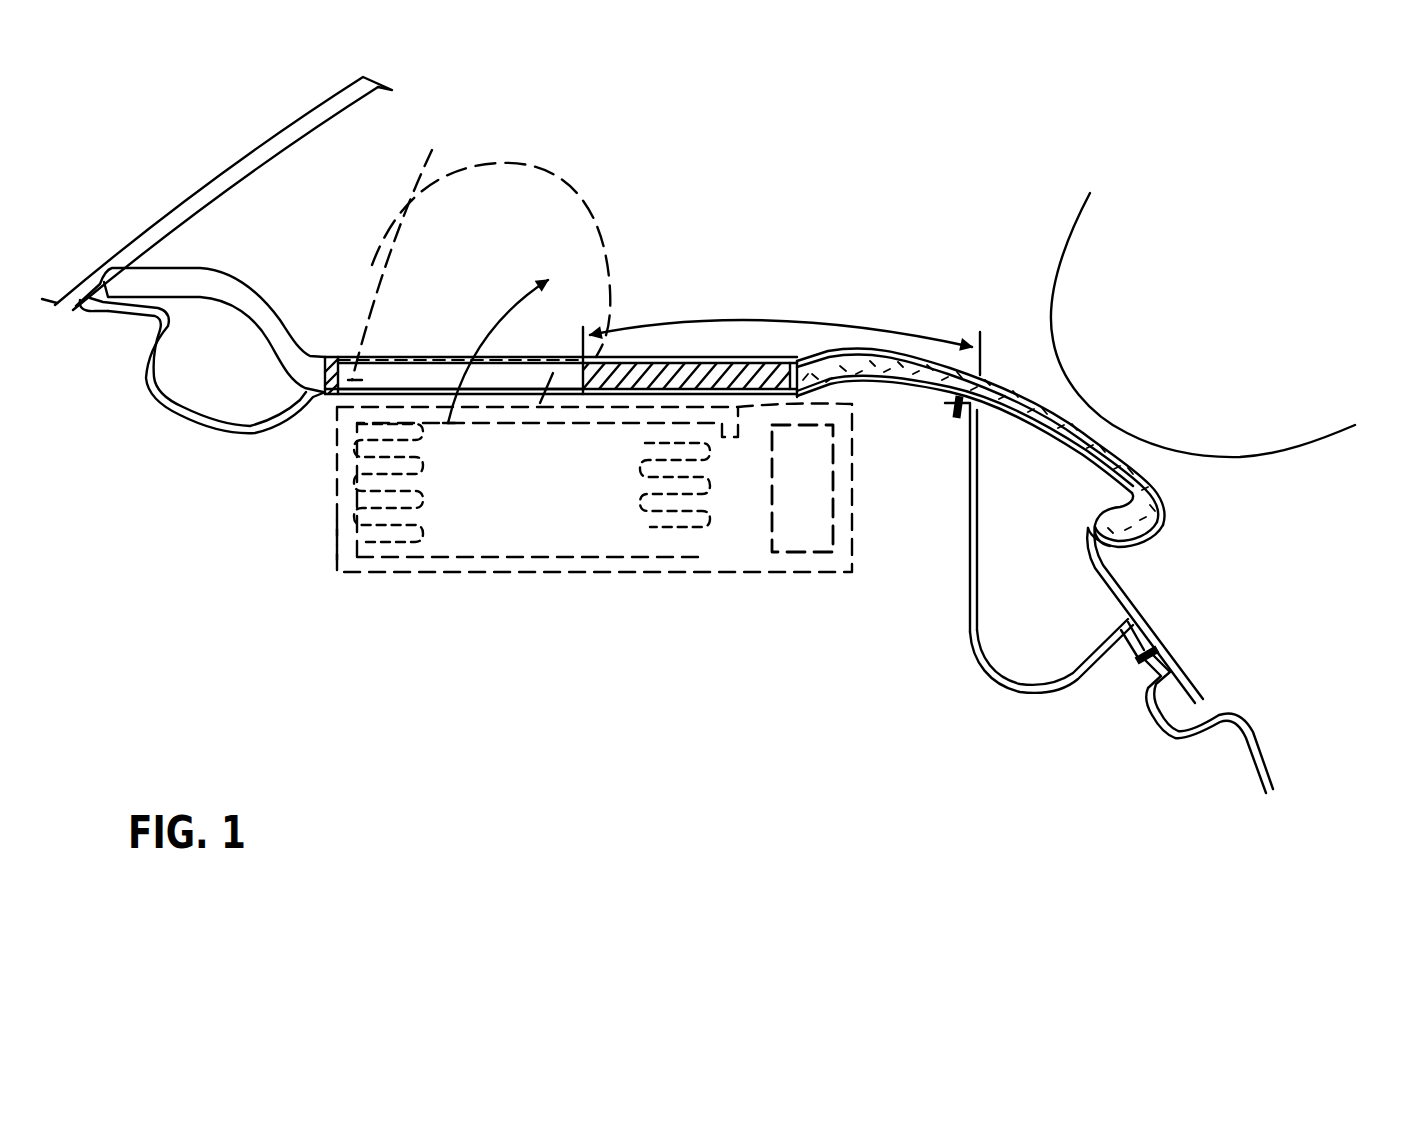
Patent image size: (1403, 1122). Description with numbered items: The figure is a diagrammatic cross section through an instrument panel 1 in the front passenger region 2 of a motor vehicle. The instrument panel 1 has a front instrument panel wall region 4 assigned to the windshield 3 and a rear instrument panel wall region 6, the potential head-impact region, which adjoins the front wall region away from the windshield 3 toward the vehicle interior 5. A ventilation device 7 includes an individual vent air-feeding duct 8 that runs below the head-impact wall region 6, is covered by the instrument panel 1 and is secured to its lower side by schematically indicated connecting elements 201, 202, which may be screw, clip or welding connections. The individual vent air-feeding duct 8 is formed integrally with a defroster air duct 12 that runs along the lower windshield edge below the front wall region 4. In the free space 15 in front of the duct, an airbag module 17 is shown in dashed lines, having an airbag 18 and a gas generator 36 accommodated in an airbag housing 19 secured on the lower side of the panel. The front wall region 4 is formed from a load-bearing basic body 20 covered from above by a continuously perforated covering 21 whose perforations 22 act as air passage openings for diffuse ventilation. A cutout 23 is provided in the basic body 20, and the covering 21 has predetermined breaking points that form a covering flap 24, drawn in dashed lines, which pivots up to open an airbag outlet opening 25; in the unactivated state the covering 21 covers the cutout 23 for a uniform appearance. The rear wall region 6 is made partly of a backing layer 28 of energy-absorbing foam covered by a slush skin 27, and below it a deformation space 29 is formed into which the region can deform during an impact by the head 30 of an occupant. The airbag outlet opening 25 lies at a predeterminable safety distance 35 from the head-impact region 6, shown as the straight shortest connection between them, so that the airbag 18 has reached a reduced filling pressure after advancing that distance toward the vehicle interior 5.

The instrument panel 1 is at (842, 352).
The front passenger region 2 is at (1021, 250).
The windshield 3 is at (197, 187).
The front instrument panel wall region 4 is at (438, 352).
The vehicle interior 5 is at (1252, 552).
The rear instrument panel wall region 6 is at (1034, 421).
The ventilation device 7 is at (989, 694).
The individual vent air-feeding duct 8 is at (1060, 687).
The defroster air duct 12 is at (192, 412).
The free space 15 is at (612, 602).
The airbag module 17 is at (529, 578).
The airbag 18 is at (586, 204).
The airbag housing 19 is at (330, 534).
The load-bearing basic body 20 is at (643, 377).
The covering 21 is at (462, 352).
The perforations 22 is at (392, 360).
The cutout 23 is at (517, 382).
The covering flap 24 is at (416, 183).
The airbag outlet opening 25 is at (555, 333).
The slush skin 27 is at (1017, 387).
The backing layer 28 is at (1140, 507).
The deformation space 29 is at (956, 677).
The head 30 is at (1056, 338).
The safety distance 35 is at (781, 338).
The gas generator 36 is at (793, 535).
The connecting element 201 is at (950, 427).
The connecting element 202 is at (1135, 673).